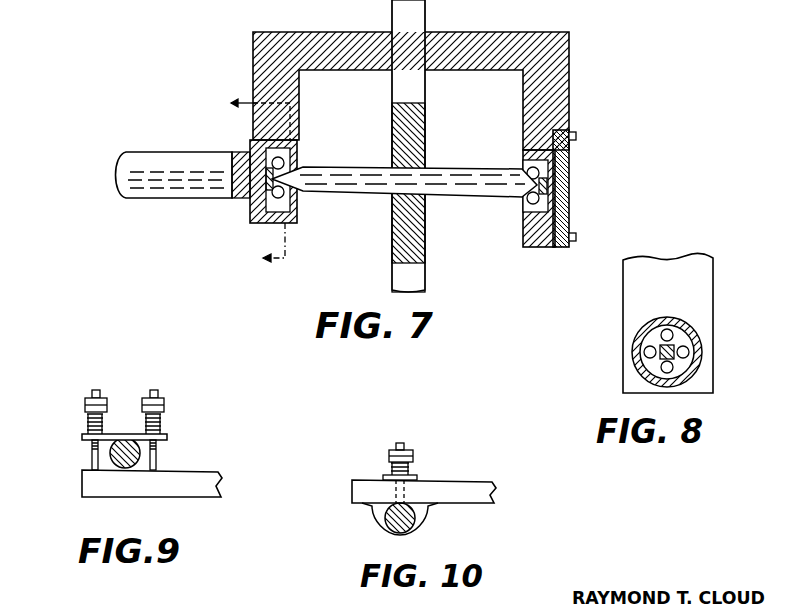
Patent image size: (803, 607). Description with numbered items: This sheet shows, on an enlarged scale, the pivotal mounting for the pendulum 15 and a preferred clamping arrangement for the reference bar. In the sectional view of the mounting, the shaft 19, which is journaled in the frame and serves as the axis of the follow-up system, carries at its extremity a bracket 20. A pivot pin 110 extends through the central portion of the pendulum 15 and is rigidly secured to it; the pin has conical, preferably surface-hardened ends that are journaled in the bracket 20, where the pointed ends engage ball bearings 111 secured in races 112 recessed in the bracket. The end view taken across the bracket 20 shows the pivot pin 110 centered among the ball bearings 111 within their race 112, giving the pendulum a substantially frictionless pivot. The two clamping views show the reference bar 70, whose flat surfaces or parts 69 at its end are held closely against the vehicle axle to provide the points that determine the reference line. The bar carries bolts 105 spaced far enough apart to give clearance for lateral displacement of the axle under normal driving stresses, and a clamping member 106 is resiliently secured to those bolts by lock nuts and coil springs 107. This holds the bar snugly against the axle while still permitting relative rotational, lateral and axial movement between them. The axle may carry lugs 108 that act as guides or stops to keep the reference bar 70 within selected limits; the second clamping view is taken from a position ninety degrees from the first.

In FIG. 7, the pendulum 15 is at (420, 20).
In FIG. 7, the shaft 19 is at (163, 157).
In FIG. 7, the bracket 20 is at (560, 62).
In FIG. 8, the bracket 20 is at (690, 272).
In FIG. 9, the flat surfaces 69 is at (113, 468).
In FIG. 9, the reference bar 70 is at (148, 488).
In FIG. 10, the reference bar 70 is at (356, 480).
In FIG. 9, the bolts 105 is at (92, 455).
In FIG. 9, the clamping member 106 is at (167, 437).
In FIG. 9, the lock nuts and coil springs 107 is at (107, 405).
In FIG. 10, the lock nuts and coil springs 107 is at (410, 472).
In FIG. 10, the lugs 108 is at (419, 523).
In FIG. 7, the pivot pin 110 is at (447, 178).
In FIG. 8, the pivot pin 110 is at (675, 343).
In FIG. 7, the ball bearings 111 is at (268, 207).
In FIG. 8, the ball bearings 111 is at (688, 361).
In FIG. 7, the races 112 is at (266, 152).
In FIG. 8, the races 112 is at (700, 341).